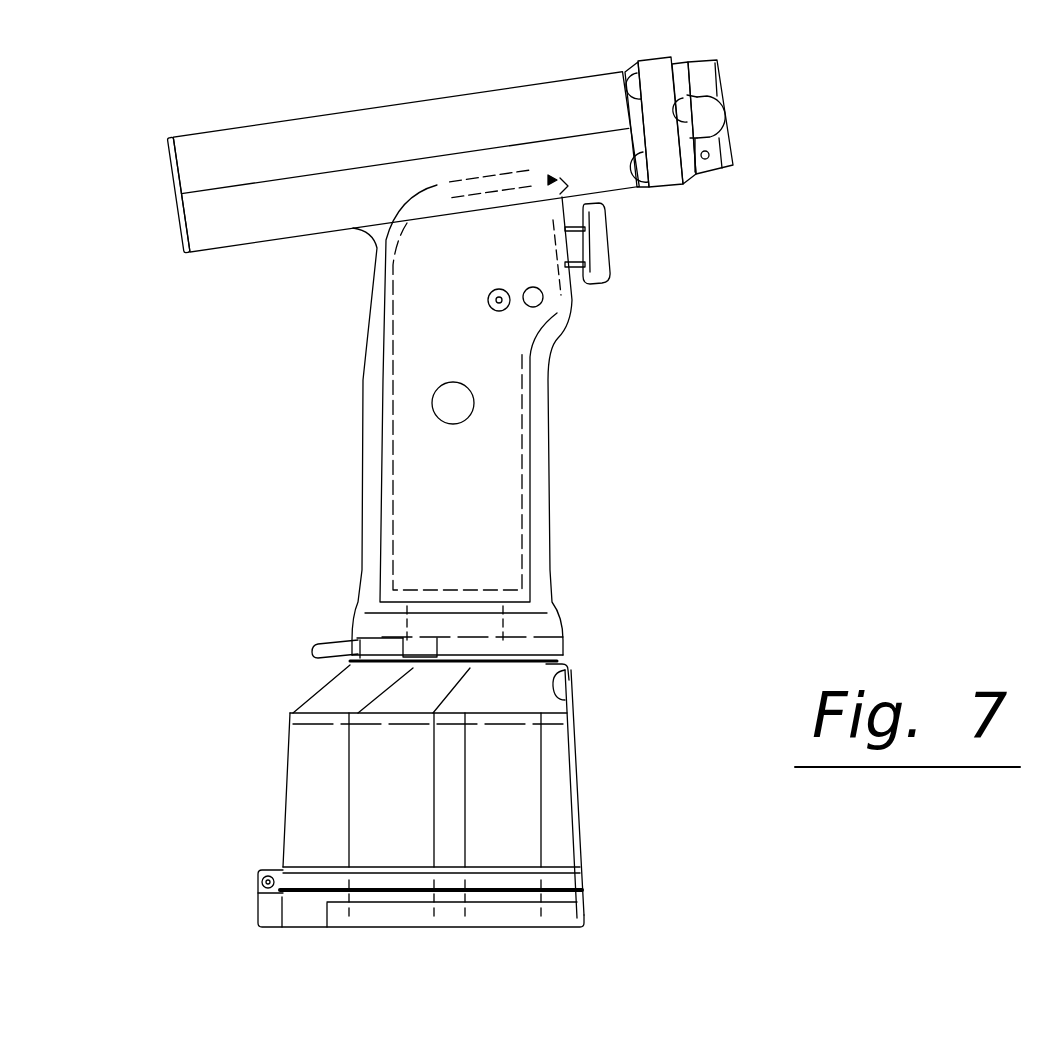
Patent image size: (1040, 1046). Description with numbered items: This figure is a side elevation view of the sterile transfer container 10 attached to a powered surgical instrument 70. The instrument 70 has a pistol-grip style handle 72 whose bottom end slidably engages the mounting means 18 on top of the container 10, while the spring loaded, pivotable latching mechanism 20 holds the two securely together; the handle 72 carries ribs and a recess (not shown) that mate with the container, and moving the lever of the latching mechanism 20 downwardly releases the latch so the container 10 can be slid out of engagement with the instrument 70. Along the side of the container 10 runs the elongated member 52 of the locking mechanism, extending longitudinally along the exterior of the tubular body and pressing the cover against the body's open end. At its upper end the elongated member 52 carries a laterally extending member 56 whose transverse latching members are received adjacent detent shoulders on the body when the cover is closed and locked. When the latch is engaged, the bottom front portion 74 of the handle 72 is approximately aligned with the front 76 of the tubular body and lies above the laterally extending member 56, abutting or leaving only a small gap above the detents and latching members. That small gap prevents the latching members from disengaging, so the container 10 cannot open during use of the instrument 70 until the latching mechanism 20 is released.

The sterile transfer container 10 is at (430, 780).
The mounting means 18 is at (426, 653).
The latching mechanism 20 is at (310, 639).
The elongated member 52 is at (575, 747).
The laterally extending member 56 is at (575, 705).
The powered surgical instrument 70 is at (550, 437).
The handle 72 is at (553, 590).
The bottom front portion 74 is at (563, 640).
The front 76 is at (573, 675).